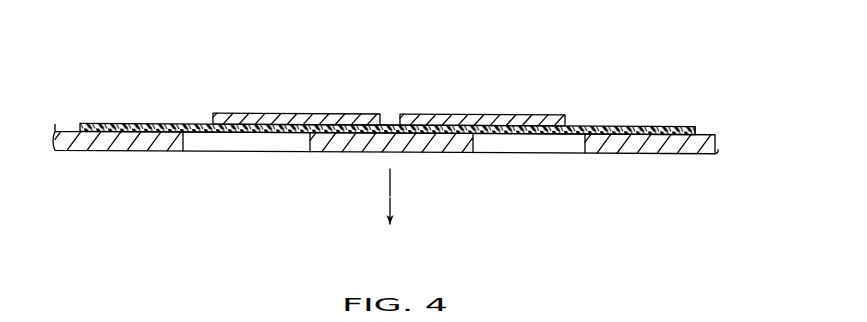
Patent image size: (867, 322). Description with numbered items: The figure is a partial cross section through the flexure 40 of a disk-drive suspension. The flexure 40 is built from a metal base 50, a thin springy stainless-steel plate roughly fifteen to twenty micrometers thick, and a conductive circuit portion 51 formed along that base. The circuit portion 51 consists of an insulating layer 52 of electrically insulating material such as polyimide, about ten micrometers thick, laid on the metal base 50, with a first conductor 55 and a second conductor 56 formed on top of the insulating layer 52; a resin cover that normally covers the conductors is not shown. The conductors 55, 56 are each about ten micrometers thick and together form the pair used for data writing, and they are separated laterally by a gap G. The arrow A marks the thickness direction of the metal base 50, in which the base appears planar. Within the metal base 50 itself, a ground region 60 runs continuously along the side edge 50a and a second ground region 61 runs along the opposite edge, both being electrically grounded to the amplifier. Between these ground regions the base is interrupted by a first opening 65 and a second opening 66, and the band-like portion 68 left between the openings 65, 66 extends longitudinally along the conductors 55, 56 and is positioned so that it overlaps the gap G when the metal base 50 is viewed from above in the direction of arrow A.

The conductive circuit portion 51 is at (594, 65).
The flexure 40 is at (601, 158).
The metal base 50 is at (697, 125).
The side edge 50a is at (719, 152).
The insulating layer 52 is at (167, 123).
The first conductor 55 is at (485, 120).
The second conductor 56 is at (285, 118).
The gap G is at (389, 119).
The ground region 60 is at (661, 152).
The ground region 61 is at (117, 151).
The first opening 65 is at (527, 151).
The second opening 66 is at (242, 150).
The band-like portion 68 is at (350, 150).
The arrow indicating thickness direction A is at (391, 197).